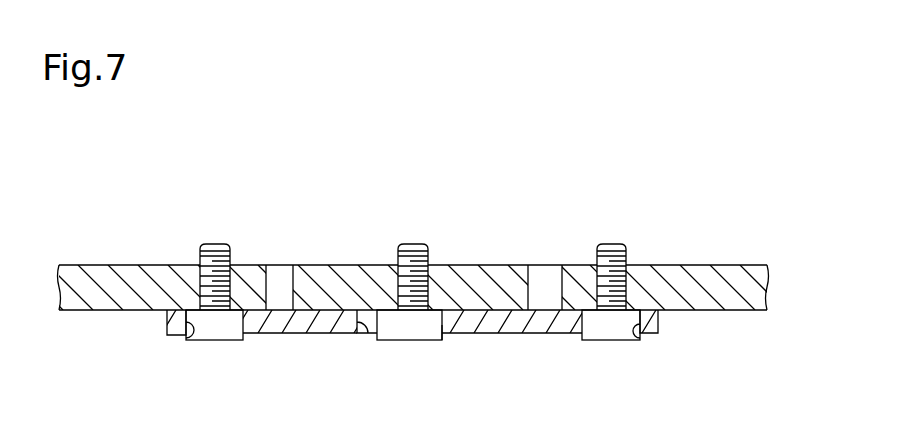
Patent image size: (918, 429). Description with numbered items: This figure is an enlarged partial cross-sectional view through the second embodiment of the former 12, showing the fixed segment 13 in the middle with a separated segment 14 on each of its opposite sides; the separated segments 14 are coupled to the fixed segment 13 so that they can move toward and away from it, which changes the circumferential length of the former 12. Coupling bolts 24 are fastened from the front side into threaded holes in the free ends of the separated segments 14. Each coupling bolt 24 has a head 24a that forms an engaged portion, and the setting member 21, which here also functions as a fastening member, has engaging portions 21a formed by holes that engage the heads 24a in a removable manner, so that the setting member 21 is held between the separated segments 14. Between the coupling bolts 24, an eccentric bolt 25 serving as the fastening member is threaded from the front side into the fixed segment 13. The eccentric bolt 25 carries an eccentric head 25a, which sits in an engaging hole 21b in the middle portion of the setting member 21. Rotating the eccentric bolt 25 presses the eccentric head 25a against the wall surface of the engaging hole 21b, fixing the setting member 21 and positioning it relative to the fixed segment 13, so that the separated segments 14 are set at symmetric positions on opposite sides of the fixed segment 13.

The former 12 is at (92, 264).
The fixed segment 13 is at (319, 272).
The separated segments 14 is at (128, 266).
The setting member 21 is at (288, 334).
The engaging portion 21a is at (188, 342).
The engaging hole 21b is at (368, 336).
The coupling bolt 24 is at (216, 243).
The head 24a is at (219, 332).
The eccentric bolt 25 is at (427, 333).
The head 25a is at (443, 341).